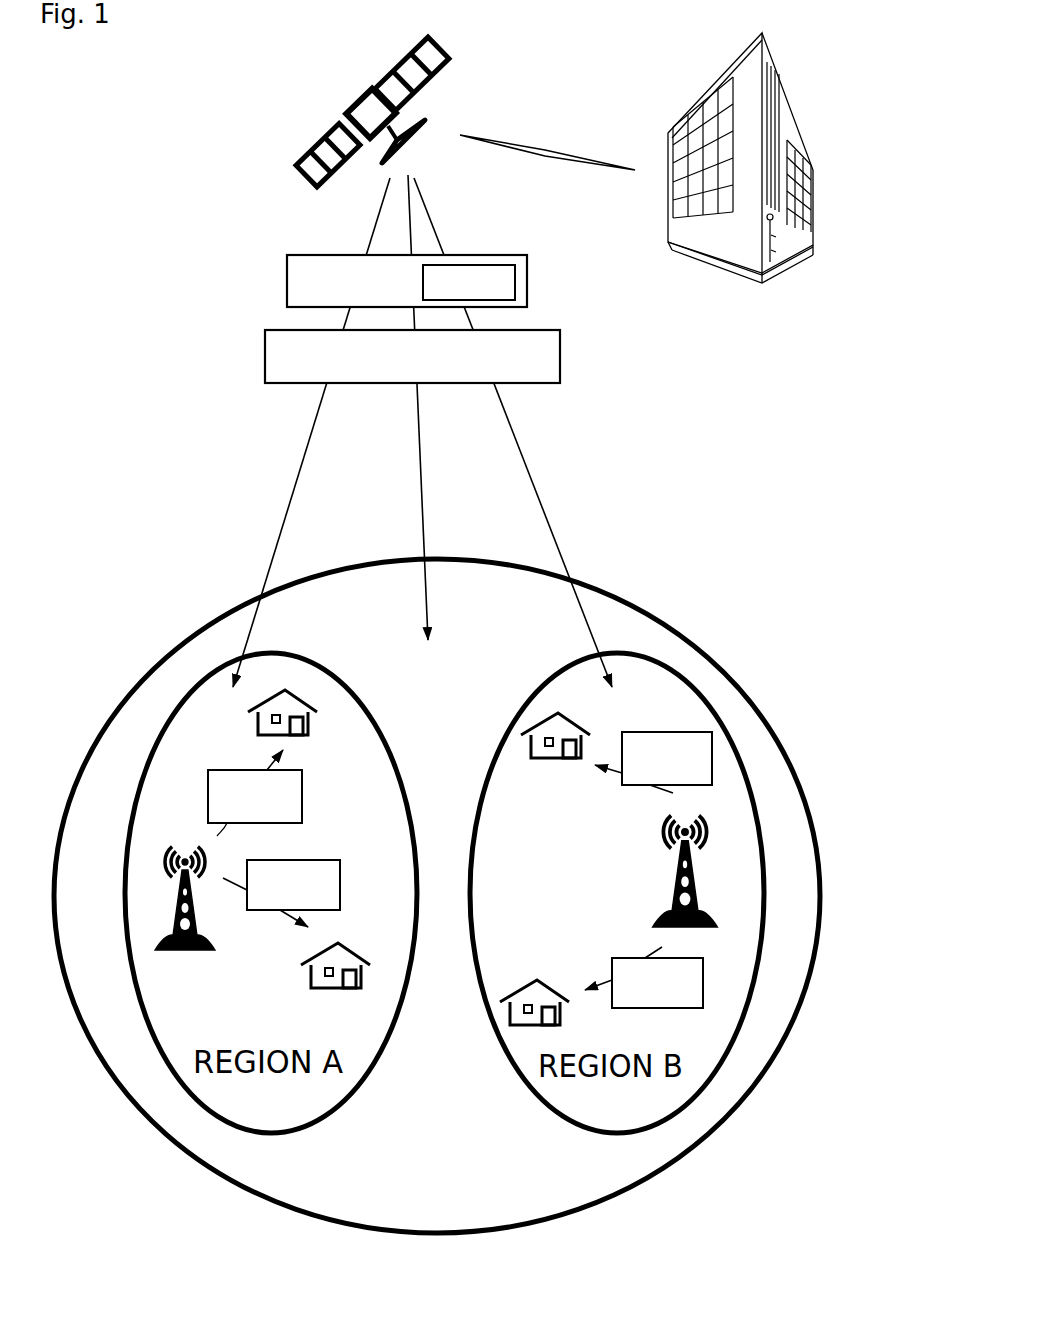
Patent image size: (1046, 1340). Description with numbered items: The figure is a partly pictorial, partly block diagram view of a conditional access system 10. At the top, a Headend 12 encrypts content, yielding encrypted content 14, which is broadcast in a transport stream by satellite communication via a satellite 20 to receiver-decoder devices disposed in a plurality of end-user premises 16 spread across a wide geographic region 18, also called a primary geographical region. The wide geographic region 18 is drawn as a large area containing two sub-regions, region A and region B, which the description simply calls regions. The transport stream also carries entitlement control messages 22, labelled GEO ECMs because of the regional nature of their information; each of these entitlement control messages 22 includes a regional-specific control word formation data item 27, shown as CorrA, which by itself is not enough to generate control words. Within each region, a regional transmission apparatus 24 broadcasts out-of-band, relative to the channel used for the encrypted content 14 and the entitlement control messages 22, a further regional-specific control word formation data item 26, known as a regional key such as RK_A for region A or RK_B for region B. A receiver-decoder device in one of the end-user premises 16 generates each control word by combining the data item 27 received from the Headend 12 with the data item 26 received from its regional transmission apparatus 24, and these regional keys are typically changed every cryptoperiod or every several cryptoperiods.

The conditional access system 10 is at (160, 283).
The Headend 12 is at (703, 87).
The encrypted content 14 is at (560, 355).
The end-user premises 16 is at (318, 712).
The wide geographic region 18 is at (747, 693).
The satellite 20 is at (380, 72).
The entitlement control messages 22 is at (528, 282).
The regional transmission apparatus 24 is at (158, 843).
The regional-specific control word formation data item 26 is at (302, 795).
The regional-specific control word formation data item 27 is at (467, 263).